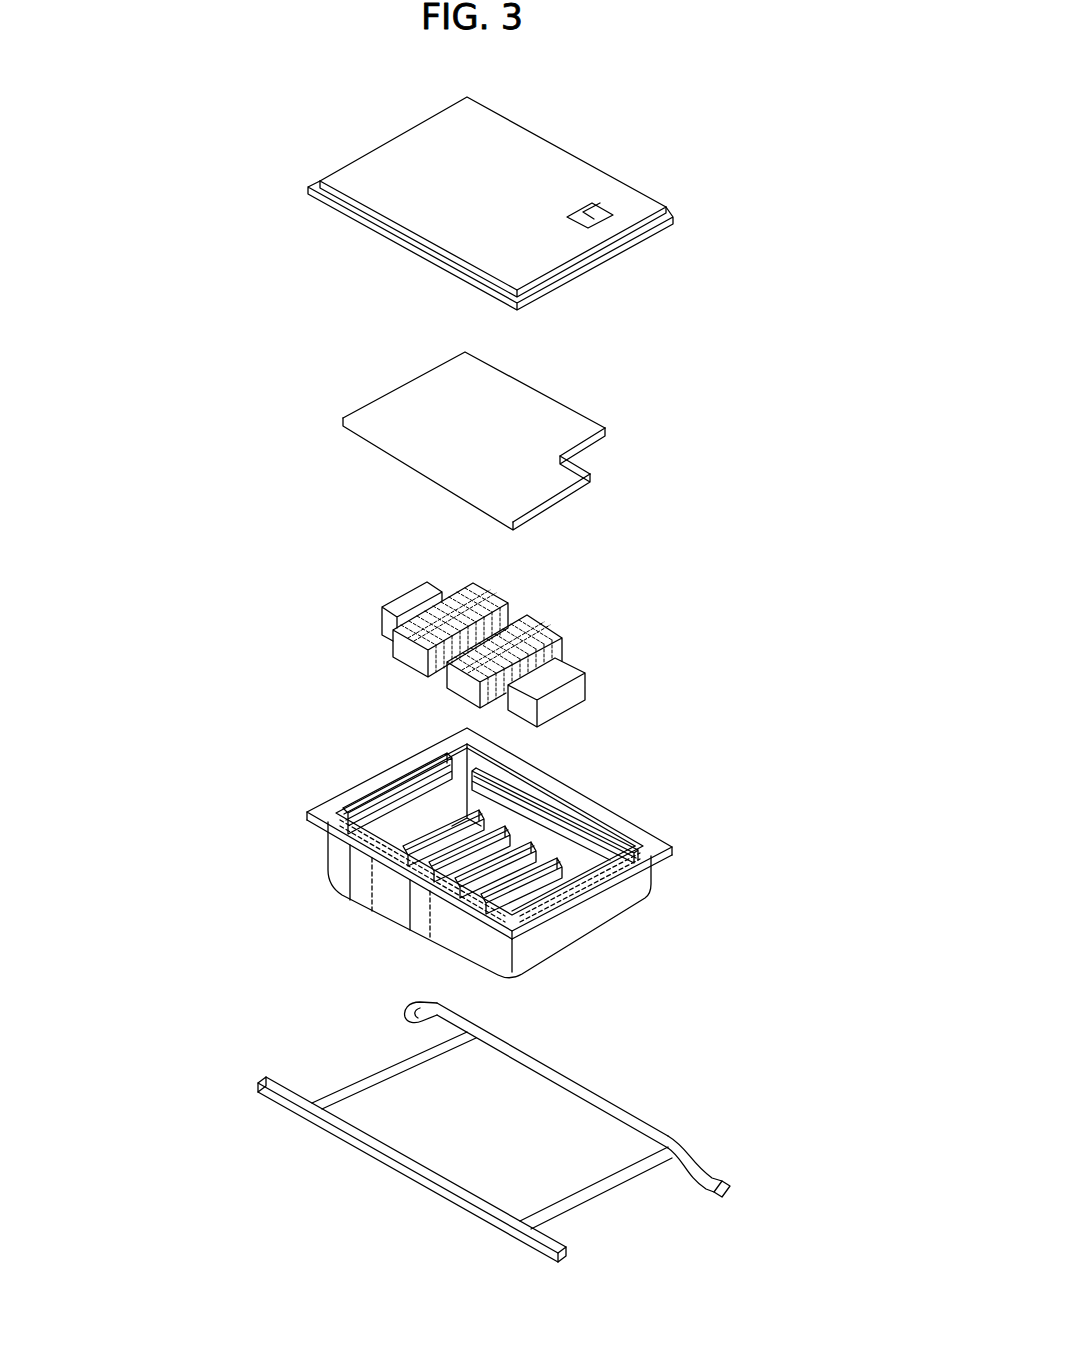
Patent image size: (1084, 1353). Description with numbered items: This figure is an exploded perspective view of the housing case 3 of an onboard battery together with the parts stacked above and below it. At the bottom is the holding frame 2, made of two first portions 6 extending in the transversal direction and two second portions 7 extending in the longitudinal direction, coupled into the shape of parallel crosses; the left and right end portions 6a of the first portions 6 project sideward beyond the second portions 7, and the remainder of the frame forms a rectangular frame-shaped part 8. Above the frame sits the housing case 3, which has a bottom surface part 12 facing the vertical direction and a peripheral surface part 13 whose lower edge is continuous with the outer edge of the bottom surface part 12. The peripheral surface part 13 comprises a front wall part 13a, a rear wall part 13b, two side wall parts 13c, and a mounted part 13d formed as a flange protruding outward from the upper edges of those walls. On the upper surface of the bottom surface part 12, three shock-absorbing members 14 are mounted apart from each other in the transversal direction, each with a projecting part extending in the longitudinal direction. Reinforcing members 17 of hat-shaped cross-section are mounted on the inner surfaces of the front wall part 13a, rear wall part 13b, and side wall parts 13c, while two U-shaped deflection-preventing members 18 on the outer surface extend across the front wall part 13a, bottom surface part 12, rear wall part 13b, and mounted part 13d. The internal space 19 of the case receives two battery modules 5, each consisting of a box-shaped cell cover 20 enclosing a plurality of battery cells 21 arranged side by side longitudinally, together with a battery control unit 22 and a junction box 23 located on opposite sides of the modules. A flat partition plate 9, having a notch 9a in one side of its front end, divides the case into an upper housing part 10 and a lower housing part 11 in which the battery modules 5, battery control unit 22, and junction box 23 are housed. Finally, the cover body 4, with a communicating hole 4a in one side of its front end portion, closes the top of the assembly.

The holding frame 2 is at (617, 1100).
The housing case 3 is at (672, 841).
The cover body 4 is at (548, 165).
The communicating hole 4a is at (601, 210).
The battery module 5 is at (492, 598).
The first portion 6 is at (390, 1172).
The end portion 6a is at (412, 1005).
The second portion 7 is at (363, 1072).
The rectangular frame-shaped part 8 is at (453, 1197).
The partition plate 9 is at (540, 405).
The notch 9a is at (602, 448).
The upper housing part 10 is at (653, 873).
The lower housing part 11 is at (647, 895).
The bottom surface part 12 is at (576, 843).
The peripheral surface part 13 is at (587, 927).
The front wall part 13a is at (635, 812).
The rear wall part 13b is at (394, 914).
The side wall part 13c is at (352, 793).
The mounted part 13d is at (586, 762).
The shock-absorbing member 14 is at (397, 822).
The reinforcing member 17 is at (352, 796).
The deflection-preventing member 18 is at (356, 878).
The internal space 19 is at (498, 738).
The cell cover 20 is at (390, 652).
The battery cell 21 is at (477, 582).
The battery control unit 22 is at (393, 600).
The junction box 23 is at (581, 690).